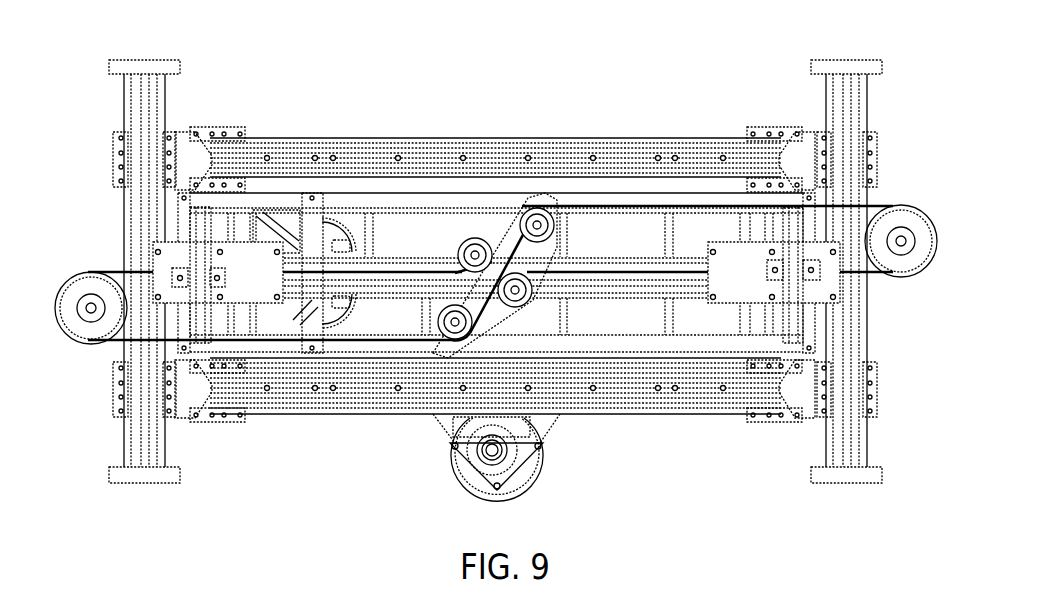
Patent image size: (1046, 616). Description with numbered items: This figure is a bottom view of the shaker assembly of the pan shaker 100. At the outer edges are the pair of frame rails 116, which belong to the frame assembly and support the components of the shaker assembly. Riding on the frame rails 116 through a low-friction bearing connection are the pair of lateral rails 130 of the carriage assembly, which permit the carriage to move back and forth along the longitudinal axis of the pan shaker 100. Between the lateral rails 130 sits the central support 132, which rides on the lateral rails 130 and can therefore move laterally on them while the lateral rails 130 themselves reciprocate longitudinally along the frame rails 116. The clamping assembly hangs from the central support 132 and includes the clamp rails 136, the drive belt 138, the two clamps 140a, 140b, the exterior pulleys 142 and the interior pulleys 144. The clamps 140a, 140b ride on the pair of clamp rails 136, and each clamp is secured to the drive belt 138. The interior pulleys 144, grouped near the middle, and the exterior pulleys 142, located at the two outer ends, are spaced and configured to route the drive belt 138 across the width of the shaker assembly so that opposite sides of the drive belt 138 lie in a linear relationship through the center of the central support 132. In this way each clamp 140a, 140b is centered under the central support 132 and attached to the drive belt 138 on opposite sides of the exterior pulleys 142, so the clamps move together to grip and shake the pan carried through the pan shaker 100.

The pan shaker 100 is at (620, 62).
The frame rails 116 is at (153, 70).
The lateral rails 130 is at (352, 155).
The central support 132 is at (597, 347).
The clamp rails 136 is at (305, 261).
The drive belt 138 is at (352, 275).
The clamp 140a is at (795, 312).
The clamp 140b is at (198, 307).
The exterior pulleys 142 is at (85, 290).
The interior pulleys 144 is at (455, 322).